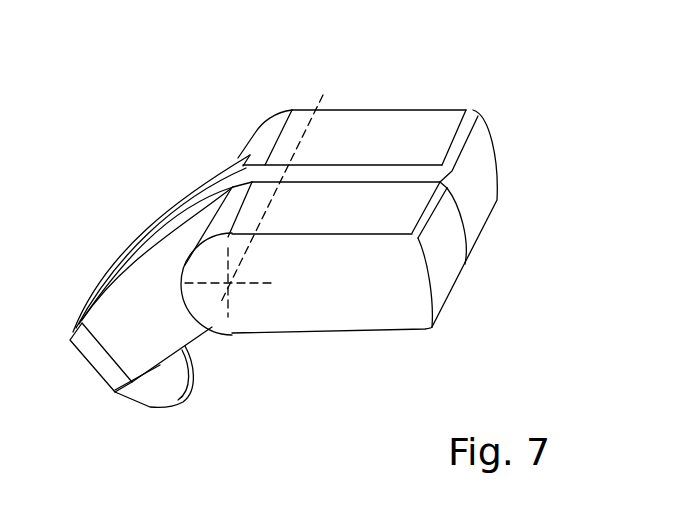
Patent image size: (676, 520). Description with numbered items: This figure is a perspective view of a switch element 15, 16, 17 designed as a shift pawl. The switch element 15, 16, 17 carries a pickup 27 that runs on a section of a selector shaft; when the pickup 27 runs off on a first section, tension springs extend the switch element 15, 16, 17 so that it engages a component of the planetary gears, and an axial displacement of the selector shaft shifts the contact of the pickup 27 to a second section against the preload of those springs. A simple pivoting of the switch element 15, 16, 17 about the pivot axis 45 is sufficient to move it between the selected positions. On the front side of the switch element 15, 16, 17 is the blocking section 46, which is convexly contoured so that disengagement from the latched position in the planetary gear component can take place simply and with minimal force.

The switch element 15 is at (213, 136).
The switch element 16 is at (165, 253).
The switch element 17 is at (157, 253).
The pickup 27 is at (183, 404).
The pivot axis 45 is at (305, 130).
The blocking section 46 is at (480, 163).